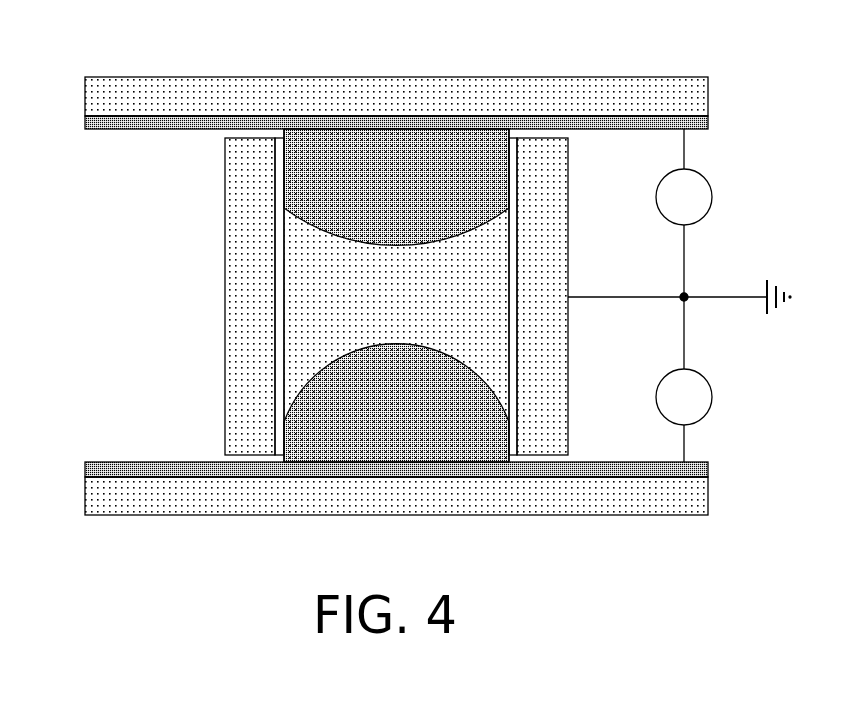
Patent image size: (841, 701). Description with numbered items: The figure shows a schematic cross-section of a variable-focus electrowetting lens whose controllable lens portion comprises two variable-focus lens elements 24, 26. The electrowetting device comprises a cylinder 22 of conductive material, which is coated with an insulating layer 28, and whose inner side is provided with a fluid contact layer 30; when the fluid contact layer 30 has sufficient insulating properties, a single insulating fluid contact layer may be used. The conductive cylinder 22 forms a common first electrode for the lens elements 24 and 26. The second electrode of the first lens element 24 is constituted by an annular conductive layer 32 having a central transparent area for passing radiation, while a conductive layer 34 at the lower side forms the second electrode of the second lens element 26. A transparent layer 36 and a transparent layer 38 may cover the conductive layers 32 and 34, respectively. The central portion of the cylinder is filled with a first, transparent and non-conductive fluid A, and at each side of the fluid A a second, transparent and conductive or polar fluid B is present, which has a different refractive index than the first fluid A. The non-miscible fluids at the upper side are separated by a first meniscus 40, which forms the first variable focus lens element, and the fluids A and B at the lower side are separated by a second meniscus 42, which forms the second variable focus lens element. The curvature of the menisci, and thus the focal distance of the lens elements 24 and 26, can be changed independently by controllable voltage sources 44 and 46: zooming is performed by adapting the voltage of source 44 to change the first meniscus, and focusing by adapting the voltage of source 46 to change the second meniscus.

The cylinder of conductive material 22 is at (236, 222).
The first variable-focus lens element 24 is at (397, 107).
The second variable-focus lens element 26 is at (400, 486).
The insulating layer 28 is at (283, 358).
The fluid contact layer 30 is at (288, 335).
The annular conductive layer 32 is at (97, 116).
The conductive layer 34 is at (520, 478).
The transparent layer 36 is at (133, 85).
The transparent layer 38 is at (611, 493).
The first meniscus 40 is at (445, 243).
The second meniscus 42 is at (426, 345).
The controllable voltage source 44 is at (709, 212).
The controllable voltage source 46 is at (709, 412).
The first fluid A is at (293, 307).
The second fluid B is at (396, 295).